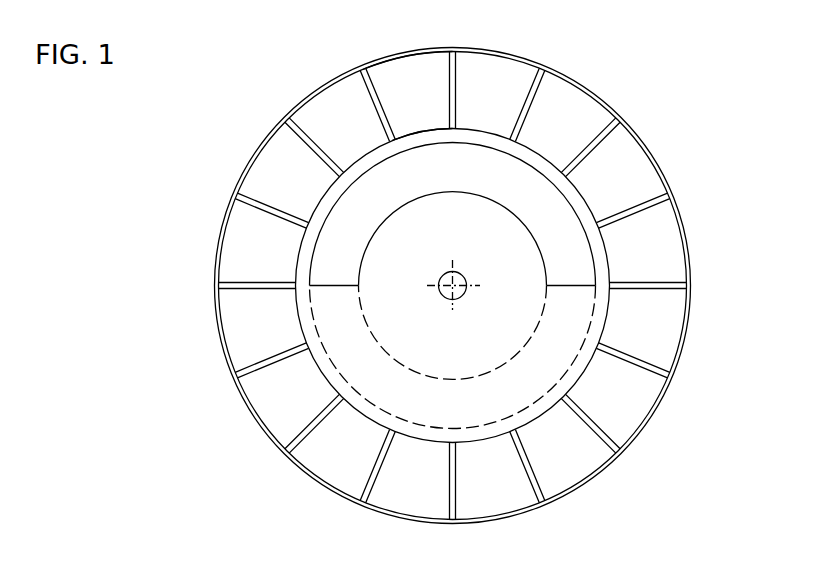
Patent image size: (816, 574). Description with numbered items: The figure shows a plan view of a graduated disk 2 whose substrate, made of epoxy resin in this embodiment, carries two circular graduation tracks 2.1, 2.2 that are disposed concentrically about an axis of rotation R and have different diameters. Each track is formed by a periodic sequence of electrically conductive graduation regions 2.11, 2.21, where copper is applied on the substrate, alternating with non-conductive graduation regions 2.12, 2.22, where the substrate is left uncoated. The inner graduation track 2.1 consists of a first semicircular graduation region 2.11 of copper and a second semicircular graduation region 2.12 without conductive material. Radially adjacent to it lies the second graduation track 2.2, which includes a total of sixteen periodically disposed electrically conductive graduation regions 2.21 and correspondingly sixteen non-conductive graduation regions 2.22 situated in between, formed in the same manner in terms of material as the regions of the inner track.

The graduated disk 2 is at (272, 465).
The inner graduation track 2.1 is at (597, 255).
The first semicircular graduation region 2.11 is at (515, 177).
The second semicircular graduation region 2.12 is at (340, 352).
The second graduation track 2.2 is at (628, 160).
The electrically conductive graduation regions 2.21 is at (412, 87).
The non-conductive graduation regions 2.22 is at (361, 68).
The axis of rotation R is at (447, 288).